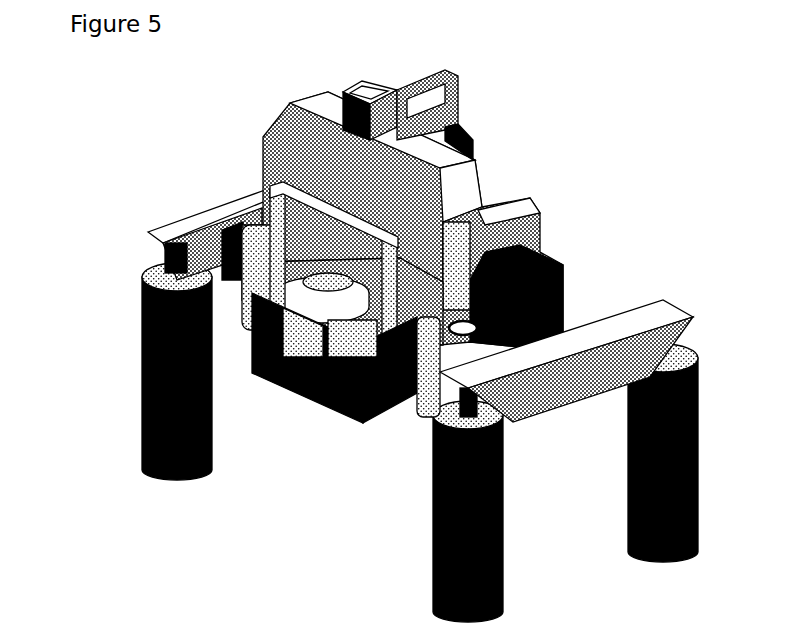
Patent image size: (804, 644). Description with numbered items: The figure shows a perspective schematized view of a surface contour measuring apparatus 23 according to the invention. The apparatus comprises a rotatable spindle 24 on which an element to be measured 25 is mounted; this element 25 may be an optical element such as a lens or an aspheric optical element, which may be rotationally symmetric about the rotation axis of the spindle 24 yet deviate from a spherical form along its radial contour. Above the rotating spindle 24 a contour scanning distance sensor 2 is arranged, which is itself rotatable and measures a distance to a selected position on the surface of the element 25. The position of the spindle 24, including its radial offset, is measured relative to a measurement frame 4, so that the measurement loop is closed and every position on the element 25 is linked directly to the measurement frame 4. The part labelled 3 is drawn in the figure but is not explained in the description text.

The rotor frame 2 is at (335, 278).
The support beam 3 is at (168, 244).
The housing 4 is at (268, 188).
The sensor assembly 23 is at (372, 559).
The support column 24 is at (252, 335).
The base block 25 is at (292, 390).